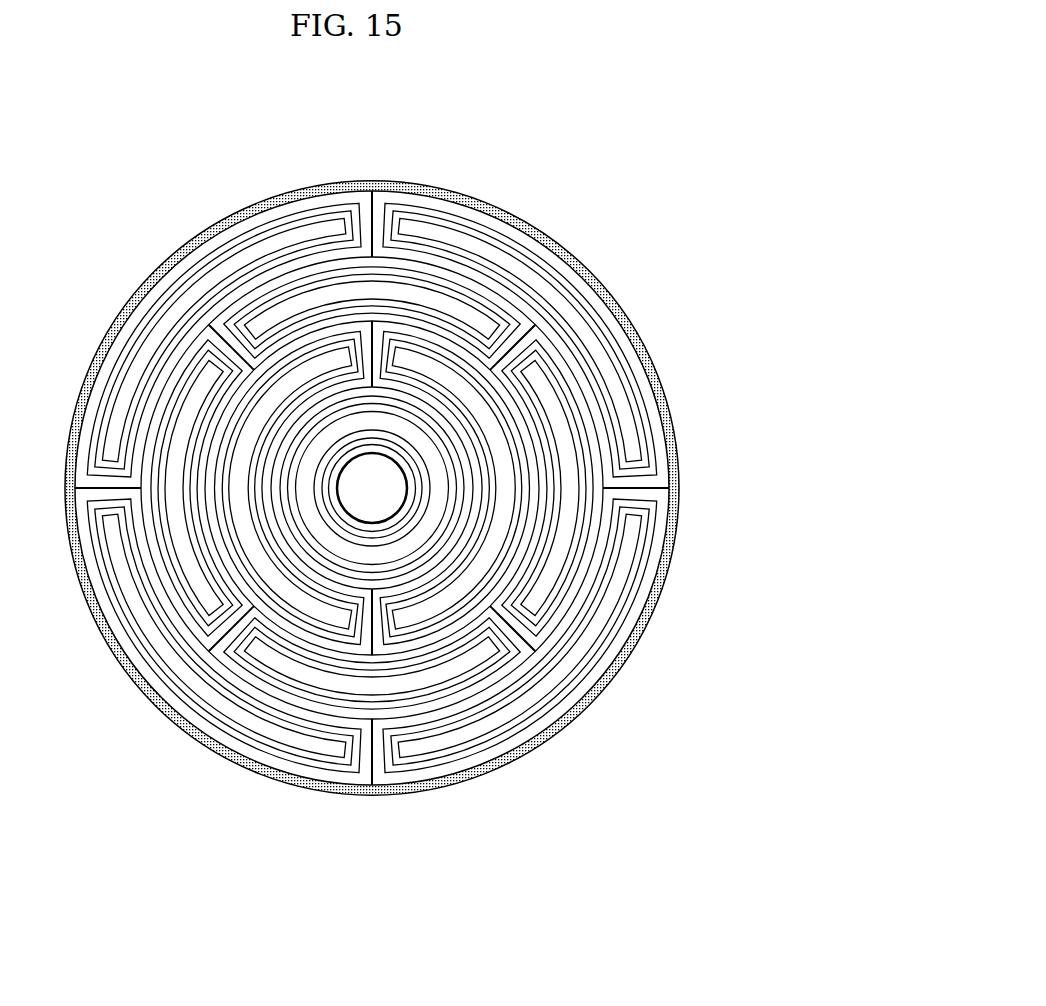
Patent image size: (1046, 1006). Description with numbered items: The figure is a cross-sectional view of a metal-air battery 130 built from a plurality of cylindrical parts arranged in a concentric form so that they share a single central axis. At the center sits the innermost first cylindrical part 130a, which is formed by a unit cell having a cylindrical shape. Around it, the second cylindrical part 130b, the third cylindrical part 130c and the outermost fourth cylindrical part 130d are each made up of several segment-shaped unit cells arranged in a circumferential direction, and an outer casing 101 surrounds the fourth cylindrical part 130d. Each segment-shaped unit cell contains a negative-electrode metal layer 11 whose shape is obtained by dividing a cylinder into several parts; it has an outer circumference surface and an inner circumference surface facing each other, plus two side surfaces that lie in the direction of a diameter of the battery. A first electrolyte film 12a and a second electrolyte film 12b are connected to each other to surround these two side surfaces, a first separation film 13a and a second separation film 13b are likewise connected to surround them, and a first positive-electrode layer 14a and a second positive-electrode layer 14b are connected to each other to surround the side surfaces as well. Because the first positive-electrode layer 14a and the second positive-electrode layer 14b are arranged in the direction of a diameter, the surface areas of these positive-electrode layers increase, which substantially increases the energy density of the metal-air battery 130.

The metal-air battery 130 is at (601, 166).
The outer casing 101 is at (505, 216).
The negative-electrode metal layer 11 is at (223, 268).
The first electrolyte film 12a is at (260, 238).
The first separation film 13a is at (305, 215).
The first positive-electrode layer 14a is at (350, 198).
The second electrolyte film 12b is at (547, 305).
The second separation film 13b is at (573, 340).
The second positive-electrode layer 14b is at (587, 387).
The first cylindrical part 130a is at (444, 487).
The second cylindrical part 130b is at (299, 603).
The third cylindrical part 130c is at (314, 686).
The fourth cylindrical part 130d is at (551, 683).